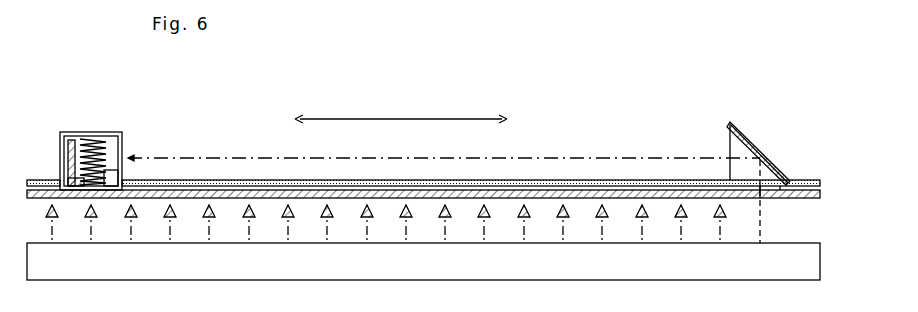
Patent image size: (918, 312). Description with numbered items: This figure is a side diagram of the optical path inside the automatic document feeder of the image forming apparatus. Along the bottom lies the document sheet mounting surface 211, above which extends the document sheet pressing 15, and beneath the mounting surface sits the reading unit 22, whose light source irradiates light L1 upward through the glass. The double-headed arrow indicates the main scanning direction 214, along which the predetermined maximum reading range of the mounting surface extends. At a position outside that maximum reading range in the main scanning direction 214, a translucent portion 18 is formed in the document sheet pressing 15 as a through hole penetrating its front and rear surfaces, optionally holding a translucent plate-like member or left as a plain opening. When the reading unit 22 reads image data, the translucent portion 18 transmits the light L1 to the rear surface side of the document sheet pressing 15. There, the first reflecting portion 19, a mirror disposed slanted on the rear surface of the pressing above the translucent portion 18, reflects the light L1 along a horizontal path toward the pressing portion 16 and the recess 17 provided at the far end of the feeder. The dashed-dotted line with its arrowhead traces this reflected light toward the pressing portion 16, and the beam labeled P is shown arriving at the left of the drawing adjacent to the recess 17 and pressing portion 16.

The document sheet pressing 15 is at (822, 182).
The document sheet mounting surface 211 is at (822, 198).
The reading unit 22 is at (822, 262).
The pressing portion 16 is at (70, 135).
The recess 17 is at (112, 135).
The first reflecting portion 19 is at (749, 139).
The translucent portion 18 is at (772, 200).
The main scanning direction 214 is at (393, 117).
The laser beam P is at (56, 183).
The light L1 is at (622, 153).